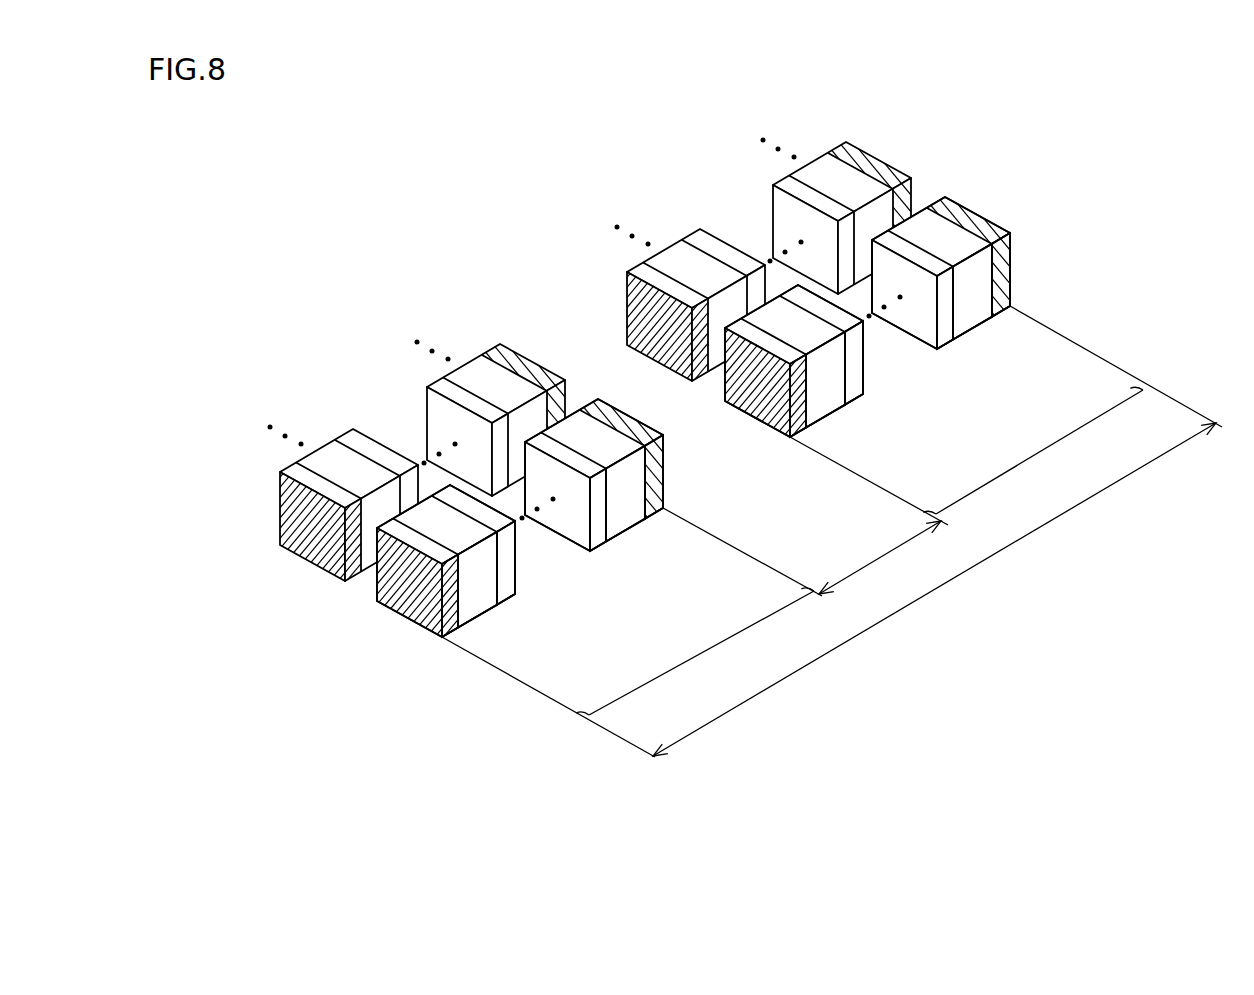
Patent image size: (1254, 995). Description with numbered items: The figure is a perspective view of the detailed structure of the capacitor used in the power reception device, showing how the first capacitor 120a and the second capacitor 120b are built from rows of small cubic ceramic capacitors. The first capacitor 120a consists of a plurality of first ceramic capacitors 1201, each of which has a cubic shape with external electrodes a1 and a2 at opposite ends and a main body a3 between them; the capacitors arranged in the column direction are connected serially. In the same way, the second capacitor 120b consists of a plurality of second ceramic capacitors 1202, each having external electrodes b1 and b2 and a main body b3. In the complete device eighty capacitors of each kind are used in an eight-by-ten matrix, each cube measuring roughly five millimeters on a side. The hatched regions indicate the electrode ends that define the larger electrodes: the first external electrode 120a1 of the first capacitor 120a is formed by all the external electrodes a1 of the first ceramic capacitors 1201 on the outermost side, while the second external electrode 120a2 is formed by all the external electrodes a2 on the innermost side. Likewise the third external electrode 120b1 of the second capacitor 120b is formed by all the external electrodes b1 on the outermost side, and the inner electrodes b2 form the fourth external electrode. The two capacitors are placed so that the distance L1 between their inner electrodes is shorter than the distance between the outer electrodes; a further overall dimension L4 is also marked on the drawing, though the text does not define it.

The first external electrode 120a1 is at (817, 130).
The second external electrode 120a2 is at (625, 258).
The third external electrode 120b1 is at (282, 462).
The first ceramic capacitor 1201 is at (1085, 243).
The second ceramic capacitor 1202 is at (724, 609).
The external electrode a1 is at (1008, 249).
The external electrode a2 is at (949, 305).
The main body a3 is at (980, 270).
The external electrode b1 is at (598, 551).
The external electrode b2 is at (656, 514).
The main body b3 is at (631, 520).
The first capacitor 120a is at (1039, 452).
The second capacitor 120b is at (701, 653).
The distance L1 is at (880, 557).
The total length L4 is at (934, 589).